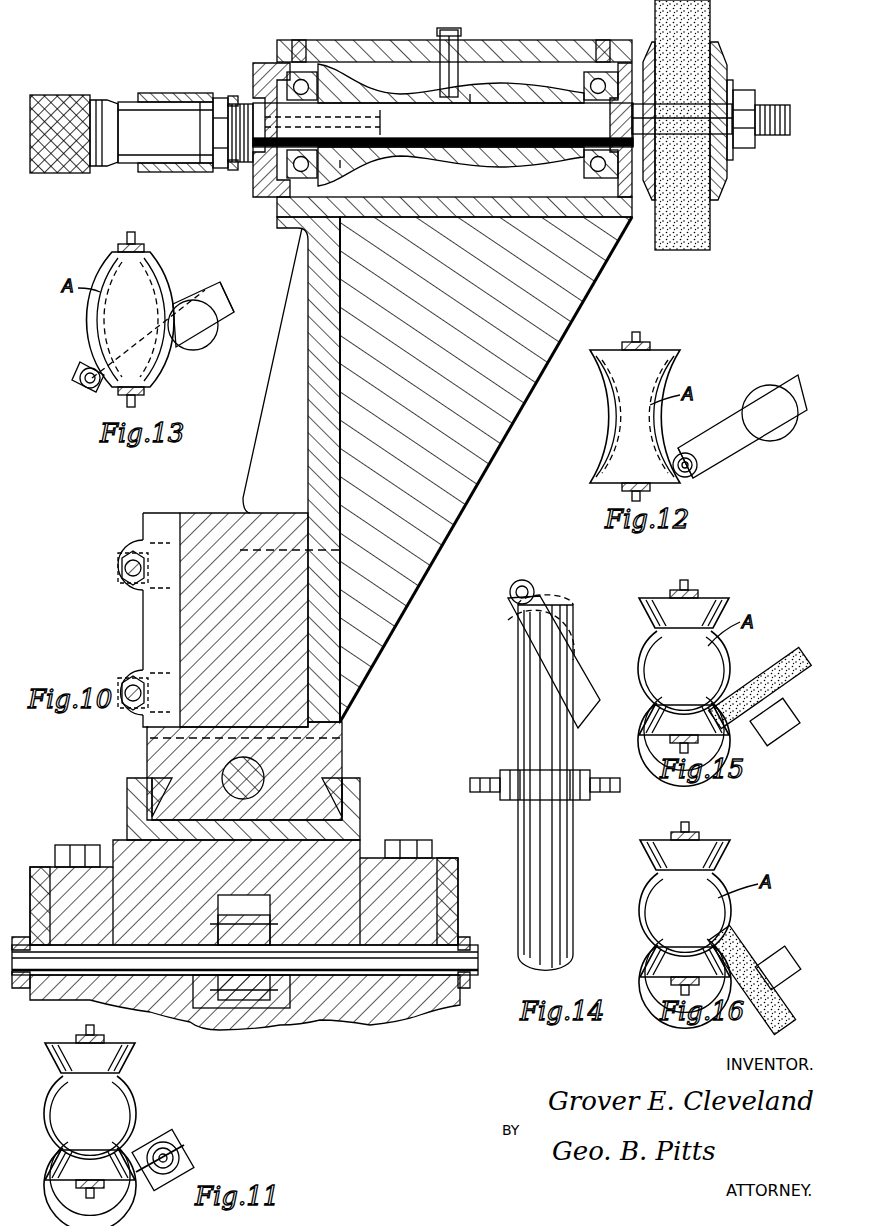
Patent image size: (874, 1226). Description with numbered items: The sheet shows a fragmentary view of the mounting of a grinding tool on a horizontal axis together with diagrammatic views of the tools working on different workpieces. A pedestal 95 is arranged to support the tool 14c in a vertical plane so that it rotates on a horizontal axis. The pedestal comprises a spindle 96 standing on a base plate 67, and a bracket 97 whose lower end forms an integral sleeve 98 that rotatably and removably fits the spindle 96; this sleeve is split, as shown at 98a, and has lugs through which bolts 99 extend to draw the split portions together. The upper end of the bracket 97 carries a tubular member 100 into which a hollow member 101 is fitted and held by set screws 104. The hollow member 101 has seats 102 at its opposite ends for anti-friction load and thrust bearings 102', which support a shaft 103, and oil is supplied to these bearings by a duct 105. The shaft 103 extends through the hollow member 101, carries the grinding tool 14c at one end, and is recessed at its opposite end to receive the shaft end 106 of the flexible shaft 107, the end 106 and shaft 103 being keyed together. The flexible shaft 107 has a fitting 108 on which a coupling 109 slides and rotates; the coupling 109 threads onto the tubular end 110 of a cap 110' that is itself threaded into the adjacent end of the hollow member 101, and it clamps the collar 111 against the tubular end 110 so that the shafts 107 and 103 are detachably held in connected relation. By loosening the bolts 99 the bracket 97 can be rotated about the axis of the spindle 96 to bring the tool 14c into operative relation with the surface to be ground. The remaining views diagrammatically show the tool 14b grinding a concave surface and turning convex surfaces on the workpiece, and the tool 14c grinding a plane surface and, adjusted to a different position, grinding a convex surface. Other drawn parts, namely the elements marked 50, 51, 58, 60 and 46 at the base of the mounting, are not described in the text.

In FIG. 10, the flexible shaft 107 is at (80, 95).
In FIG. 10, the fitting 108 is at (126, 164).
In FIG. 10, the coupling 109 is at (168, 163).
In FIG. 10, the tubular end 110 is at (230, 147).
In FIG. 10, the cap 110' is at (233, 102).
In FIG. 10, the collar 111 is at (236, 98).
In FIG. 10, the seats 102 is at (421, 141).
In FIG. 10, the anti-friction load and thrust bearings 102' is at (452, 121).
In FIG. 10, the tubular member 100 is at (383, 30).
In FIG. 10, the hollow member 101 is at (412, 168).
In FIG. 10, the shaft 103 is at (470, 160).
In FIG. 10, the set screws 104 is at (292, 44).
In FIG. 10, the duct 105 is at (445, 62).
In FIG. 10, the shaft end 106 is at (340, 168).
In FIG. 10, the grinding tool 14c is at (695, 245).
In FIG. 15, the grinding tool 14c is at (786, 656).
In FIG. 13, the tool 14b is at (80, 378).
In FIG. 12, the tool 14b is at (698, 468).
In FIG. 14, the tool 14b is at (522, 592).
In FIG. 10, the pedestal 95 is at (440, 534).
In FIG. 10, the bracket 97 is at (410, 582).
In FIG. 10, the sleeve 98 is at (332, 700).
In FIG. 10, the split 98a is at (148, 518).
In FIG. 10, the bolts 99 is at (120, 575).
In FIG. 10, the spindle 96 is at (300, 626).
In FIG. 10, the base plate 67 is at (342, 760).
In FIG. 10, the base block 50 is at (348, 848).
In FIG. 10, the clamping nut 51 is at (76, 845).
In FIG. 10, the guide bar 58 is at (470, 940).
In FIG. 10, the key 60 is at (256, 1010).
In FIG. 10, the bed 46 is at (370, 1015).